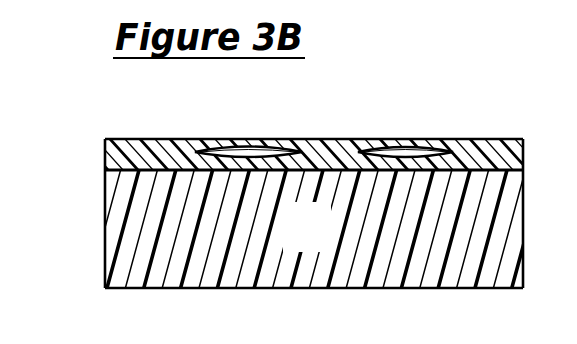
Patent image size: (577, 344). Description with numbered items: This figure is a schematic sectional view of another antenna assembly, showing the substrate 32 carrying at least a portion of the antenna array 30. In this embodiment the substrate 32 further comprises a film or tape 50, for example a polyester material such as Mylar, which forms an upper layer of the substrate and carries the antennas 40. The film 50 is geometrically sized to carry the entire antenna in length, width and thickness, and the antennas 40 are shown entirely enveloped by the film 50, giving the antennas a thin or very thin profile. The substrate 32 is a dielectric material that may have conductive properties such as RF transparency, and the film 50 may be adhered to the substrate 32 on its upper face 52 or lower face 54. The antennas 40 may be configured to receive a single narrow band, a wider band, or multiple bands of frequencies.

The antenna array 30 is at (323, 183).
The substrate 32 is at (315, 236).
The antennas 40 is at (196, 145).
The film or tape 50 is at (466, 147).
The upper face 52 is at (519, 139).
The lower face 54 is at (512, 288).